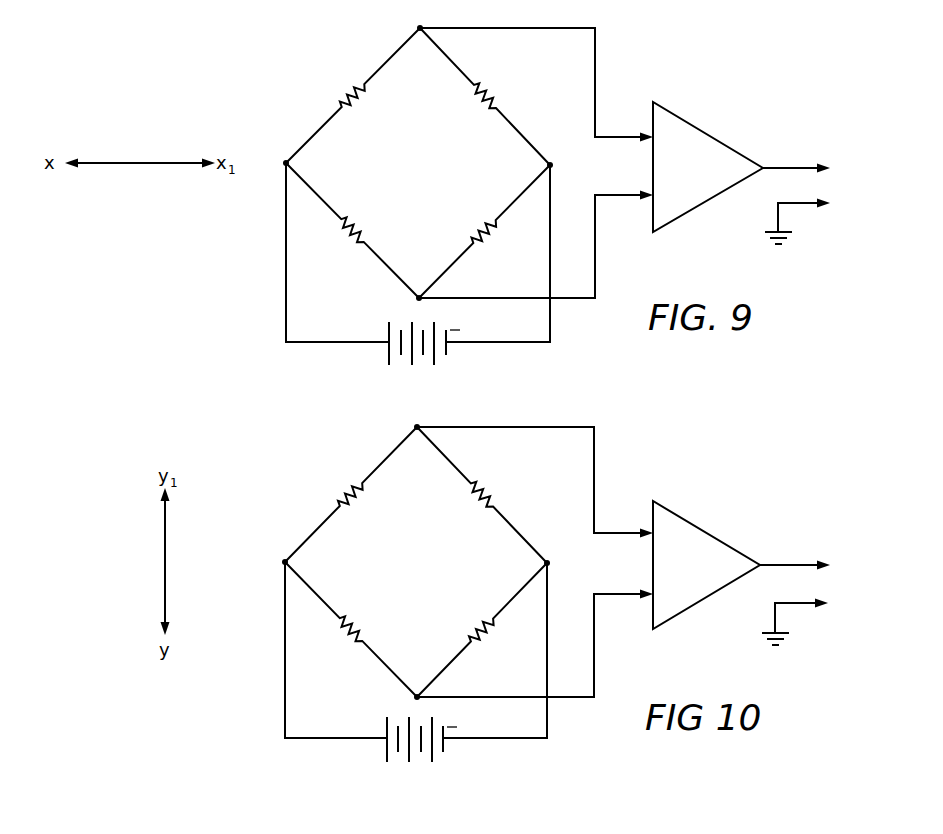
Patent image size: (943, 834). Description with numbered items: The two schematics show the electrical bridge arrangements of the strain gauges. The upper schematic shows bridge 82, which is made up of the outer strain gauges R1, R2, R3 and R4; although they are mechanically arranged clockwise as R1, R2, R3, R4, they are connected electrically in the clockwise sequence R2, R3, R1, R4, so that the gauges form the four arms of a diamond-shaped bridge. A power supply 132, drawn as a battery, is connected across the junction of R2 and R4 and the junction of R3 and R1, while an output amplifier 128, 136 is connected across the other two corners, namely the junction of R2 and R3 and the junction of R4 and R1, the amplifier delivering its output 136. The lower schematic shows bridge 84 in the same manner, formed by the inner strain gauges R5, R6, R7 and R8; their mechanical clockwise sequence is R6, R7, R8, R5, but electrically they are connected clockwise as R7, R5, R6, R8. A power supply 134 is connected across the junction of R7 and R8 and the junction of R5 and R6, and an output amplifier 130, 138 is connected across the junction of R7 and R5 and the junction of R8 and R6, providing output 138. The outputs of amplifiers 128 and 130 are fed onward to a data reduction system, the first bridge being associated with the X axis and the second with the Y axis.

In FIG. 9, the bridge 82 is at (418, 163).
In FIG. 10, the bridge 84 is at (416, 562).
In FIG. 9, the output amplifier 128 is at (700, 134).
In FIG. 10, the output amplifier 130 is at (718, 540).
In FIG. 9, the power supply 132 is at (389, 349).
In FIG. 10, the power supply 134 is at (387, 744).
In FIG. 9, the output amplifier output 136 is at (824, 162).
In FIG. 10, the output amplifier output 138 is at (824, 560).
In FIG. 9, the outer strain gauge R1 is at (407, 176).
In FIG. 9, the outer strain gauge R2 is at (353, 95).
In FIG. 9, the outer strain gauge R3 is at (485, 96).
In FIG. 9, the outer strain gauge R4 is at (352, 230).
In FIG. 10, the inner strain gauge R5 is at (482, 495).
In FIG. 10, the inner strain gauge R6 is at (403, 566).
In FIG. 10, the inner strain gauge R7 is at (351, 494).
In FIG. 10, the inner strain gauge R8 is at (351, 629).